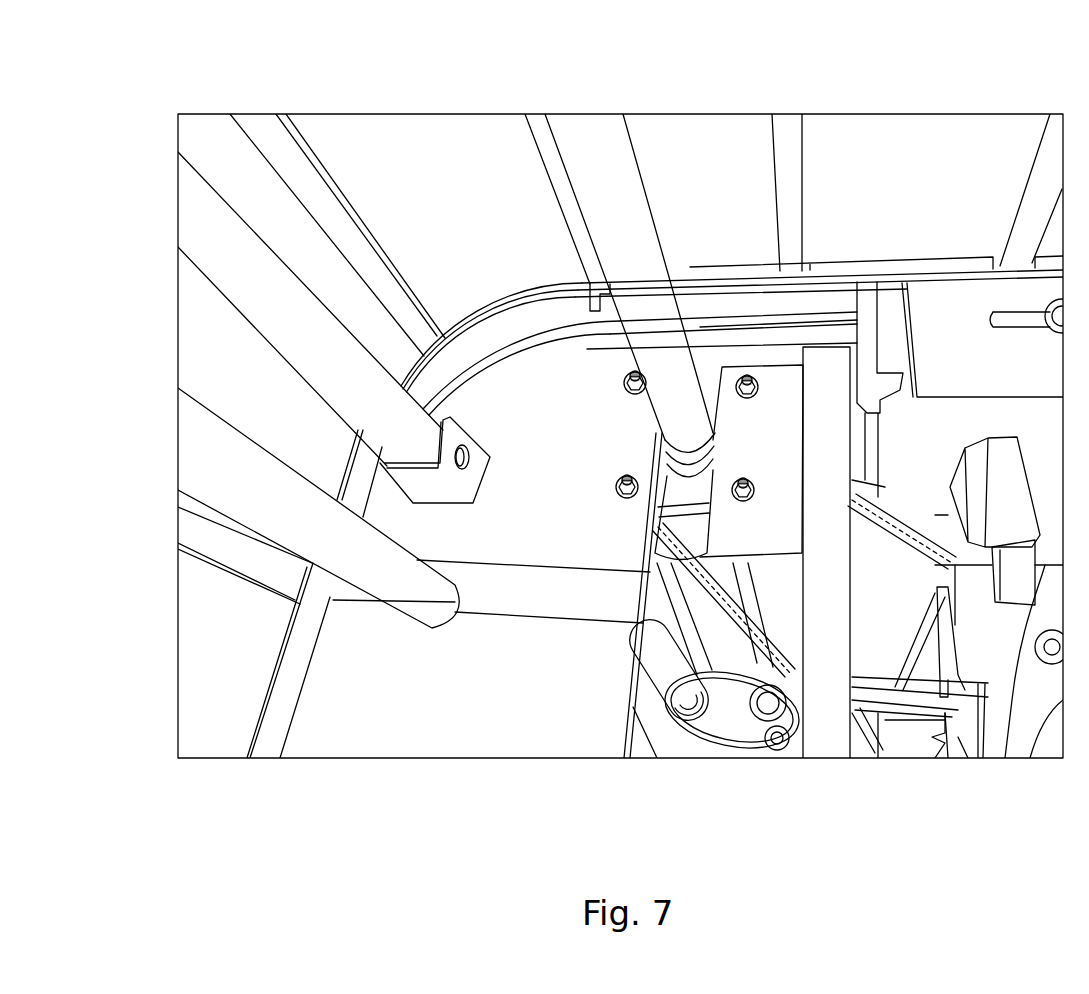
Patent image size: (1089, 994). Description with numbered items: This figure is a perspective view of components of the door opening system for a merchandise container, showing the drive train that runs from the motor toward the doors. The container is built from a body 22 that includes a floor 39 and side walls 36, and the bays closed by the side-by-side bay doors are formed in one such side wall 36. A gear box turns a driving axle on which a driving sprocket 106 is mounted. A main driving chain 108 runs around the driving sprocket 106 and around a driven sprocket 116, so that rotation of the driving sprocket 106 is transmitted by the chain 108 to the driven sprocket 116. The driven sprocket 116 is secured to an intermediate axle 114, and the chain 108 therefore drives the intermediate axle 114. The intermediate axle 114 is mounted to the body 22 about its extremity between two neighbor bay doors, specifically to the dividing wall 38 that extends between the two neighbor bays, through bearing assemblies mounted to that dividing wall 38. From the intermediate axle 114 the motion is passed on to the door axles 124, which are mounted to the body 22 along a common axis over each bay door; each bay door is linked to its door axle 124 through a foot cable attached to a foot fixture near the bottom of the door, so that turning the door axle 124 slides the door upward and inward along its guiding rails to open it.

The body 22 is at (547, 710).
The side wall 36 is at (138, 439).
The dividing wall 38 is at (397, 663).
The floor 39 is at (866, 90).
The driving sprocket 106 is at (970, 737).
The main driving chain 108 is at (793, 695).
The intermediate axle 114 is at (595, 143).
The driven sprocket 116 is at (687, 540).
The door axle 124 is at (238, 268).